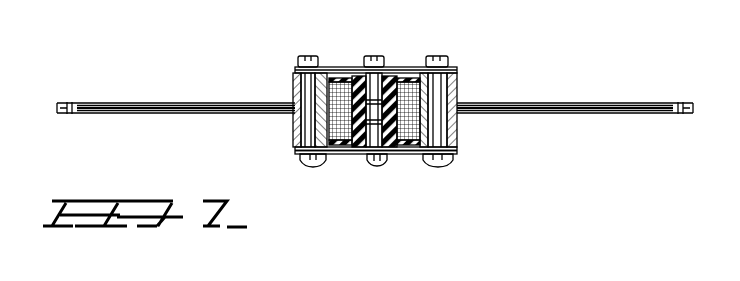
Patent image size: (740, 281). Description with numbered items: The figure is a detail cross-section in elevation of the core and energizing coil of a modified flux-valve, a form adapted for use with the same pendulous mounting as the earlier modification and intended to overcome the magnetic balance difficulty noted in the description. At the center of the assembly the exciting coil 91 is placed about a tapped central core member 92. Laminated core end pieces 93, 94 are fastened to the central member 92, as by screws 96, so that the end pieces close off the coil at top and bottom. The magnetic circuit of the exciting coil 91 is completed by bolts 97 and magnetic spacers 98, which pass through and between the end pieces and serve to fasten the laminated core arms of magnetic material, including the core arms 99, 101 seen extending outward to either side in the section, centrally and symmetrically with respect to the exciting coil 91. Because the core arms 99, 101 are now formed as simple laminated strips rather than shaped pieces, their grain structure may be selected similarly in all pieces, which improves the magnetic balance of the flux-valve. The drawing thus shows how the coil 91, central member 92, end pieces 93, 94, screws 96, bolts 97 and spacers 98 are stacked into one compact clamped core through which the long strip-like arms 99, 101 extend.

The exciting coil 91 is at (410, 84).
The central core member 92 is at (388, 76).
The laminated core end piece 93 is at (330, 73).
The laminated core end piece 94 is at (408, 155).
The screw 96 is at (374, 56).
The bolt 97 is at (305, 56).
The magnetic spacer 98 is at (457, 87).
The laminated core arm 99 is at (581, 103).
The laminated core arm 101 is at (214, 98).